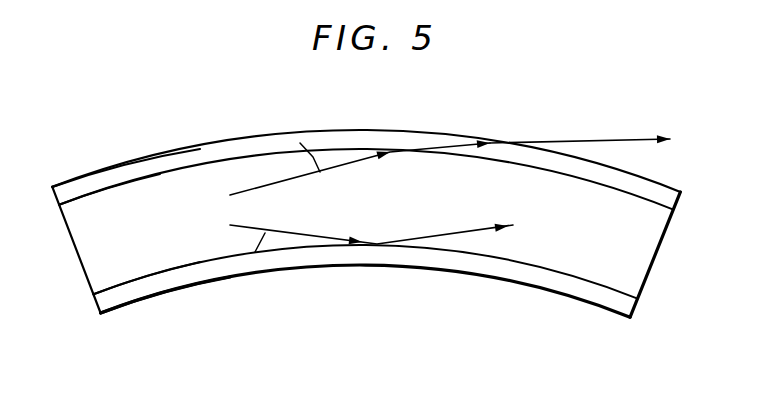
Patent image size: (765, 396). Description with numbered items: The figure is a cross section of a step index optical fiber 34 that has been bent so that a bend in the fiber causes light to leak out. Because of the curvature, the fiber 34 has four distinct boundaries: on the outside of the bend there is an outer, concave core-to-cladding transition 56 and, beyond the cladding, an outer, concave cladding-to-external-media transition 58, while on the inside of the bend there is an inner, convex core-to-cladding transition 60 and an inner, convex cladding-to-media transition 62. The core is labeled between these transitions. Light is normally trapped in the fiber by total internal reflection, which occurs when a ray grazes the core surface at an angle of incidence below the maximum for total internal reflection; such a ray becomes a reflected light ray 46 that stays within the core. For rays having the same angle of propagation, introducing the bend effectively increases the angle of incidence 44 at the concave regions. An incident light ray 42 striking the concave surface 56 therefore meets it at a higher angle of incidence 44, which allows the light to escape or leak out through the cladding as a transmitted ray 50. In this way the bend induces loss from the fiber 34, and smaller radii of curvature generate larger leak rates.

The step index optical fiber 34 is at (652, 263).
The incident light ray 42 is at (244, 191).
The angle of incidence 44 is at (304, 145).
The reflected light ray 46 is at (455, 237).
The transmitted ray 50 is at (605, 139).
The outer concave core-to-cladding transition 56 is at (98, 193).
The outer concave cladding-to-external-media transition 58 is at (127, 161).
The inner convex core-to-cladding transition 60 is at (143, 279).
The inner convex cladding-to-media transition 62 is at (190, 288).